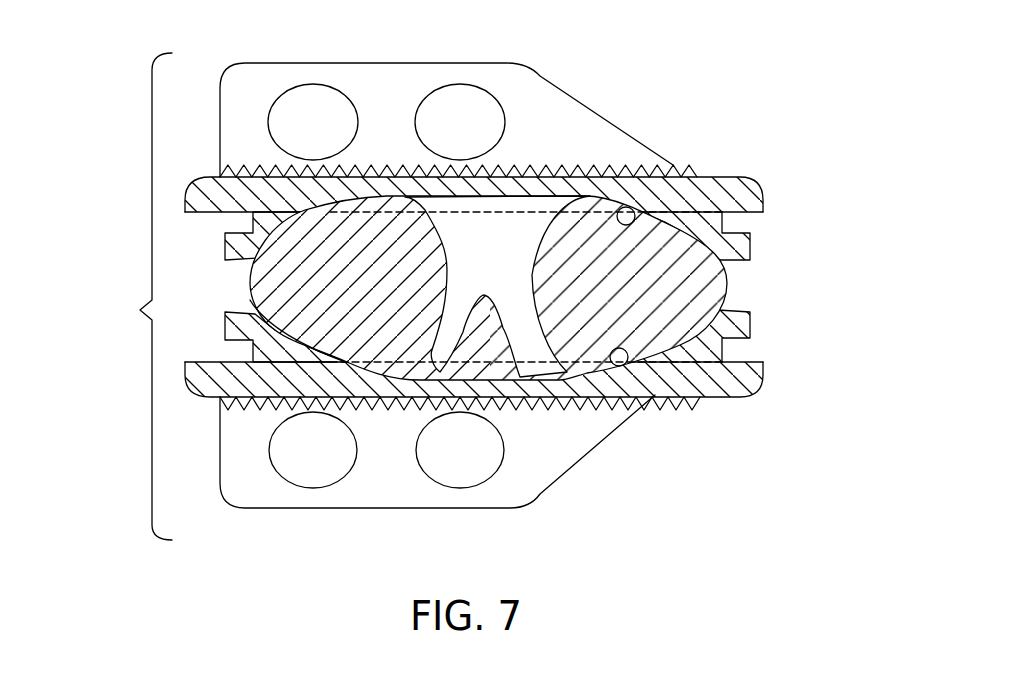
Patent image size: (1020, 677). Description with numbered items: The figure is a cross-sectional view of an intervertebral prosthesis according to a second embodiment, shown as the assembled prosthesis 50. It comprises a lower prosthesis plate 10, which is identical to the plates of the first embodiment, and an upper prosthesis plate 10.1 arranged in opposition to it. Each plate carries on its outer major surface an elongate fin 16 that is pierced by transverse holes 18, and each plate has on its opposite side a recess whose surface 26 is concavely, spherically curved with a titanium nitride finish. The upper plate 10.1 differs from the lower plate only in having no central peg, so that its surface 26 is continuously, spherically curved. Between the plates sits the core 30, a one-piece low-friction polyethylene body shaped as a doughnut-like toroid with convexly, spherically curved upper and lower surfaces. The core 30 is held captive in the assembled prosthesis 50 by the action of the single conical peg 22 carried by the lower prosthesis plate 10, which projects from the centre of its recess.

The prosthesis plate 10 is at (720, 434).
The upper prosthesis plate 10.1 is at (739, 131).
The elongate fin 16 is at (558, 112).
The transverse holes 18 is at (461, 96).
The conical peg 22 is at (477, 302).
The surface of the recess 26 is at (622, 208).
The core 30 is at (529, 288).
The assembled prosthesis 50 is at (137, 296).